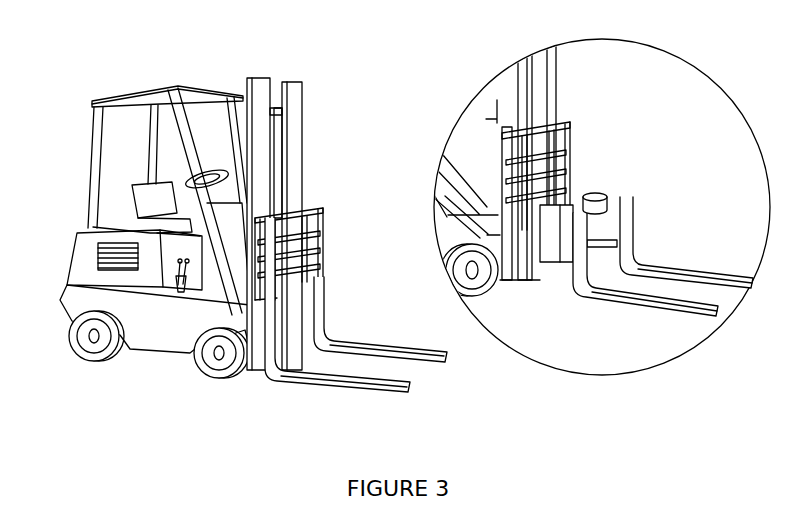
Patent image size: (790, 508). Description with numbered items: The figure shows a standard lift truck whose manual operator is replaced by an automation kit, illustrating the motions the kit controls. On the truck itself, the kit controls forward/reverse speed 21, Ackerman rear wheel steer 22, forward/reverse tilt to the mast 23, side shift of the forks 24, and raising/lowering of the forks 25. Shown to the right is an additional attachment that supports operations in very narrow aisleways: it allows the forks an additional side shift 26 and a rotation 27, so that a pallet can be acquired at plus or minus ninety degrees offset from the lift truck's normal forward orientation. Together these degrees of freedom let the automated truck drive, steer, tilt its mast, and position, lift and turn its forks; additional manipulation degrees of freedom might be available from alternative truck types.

The forward/reverse speed 21 is at (241, 392).
The Ackerman rear wheel steer 22 is at (110, 338).
The forward/reverse tilt to the mast 23 is at (235, 67).
The side shift of the forks 24 is at (290, 386).
The raising/lowering of the forks 25 is at (347, 307).
The additional side shift 26 is at (430, 262).
The rotation 27 is at (688, 230).